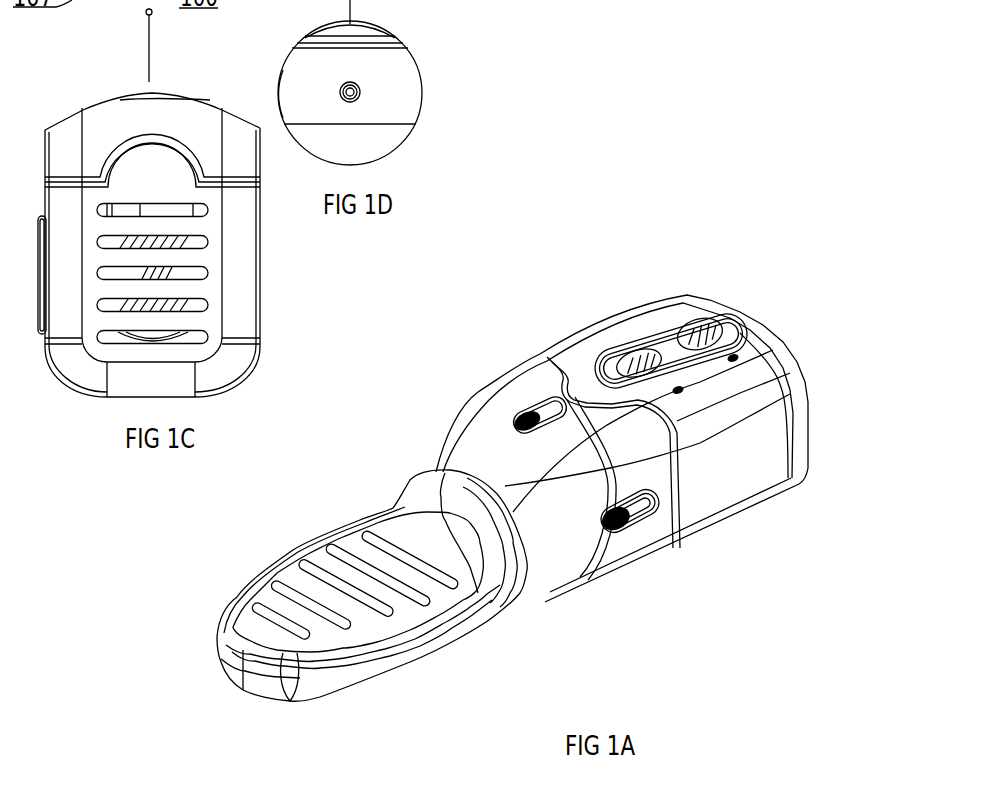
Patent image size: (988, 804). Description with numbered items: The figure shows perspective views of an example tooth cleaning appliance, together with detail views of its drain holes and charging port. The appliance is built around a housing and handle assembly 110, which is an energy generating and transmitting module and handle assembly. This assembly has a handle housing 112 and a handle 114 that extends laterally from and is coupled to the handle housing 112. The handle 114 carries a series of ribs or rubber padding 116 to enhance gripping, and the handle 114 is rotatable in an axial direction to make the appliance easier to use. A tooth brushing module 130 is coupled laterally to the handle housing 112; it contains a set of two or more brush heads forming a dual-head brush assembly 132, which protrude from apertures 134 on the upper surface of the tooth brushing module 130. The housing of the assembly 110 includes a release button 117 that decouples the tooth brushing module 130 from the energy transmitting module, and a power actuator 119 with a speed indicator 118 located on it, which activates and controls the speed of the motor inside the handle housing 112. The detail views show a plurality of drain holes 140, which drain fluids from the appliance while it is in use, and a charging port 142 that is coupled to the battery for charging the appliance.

In FIG. 1A, the housing and handle assembly 110 is at (477, 483).
In FIG. 1A, the handle housing 112 is at (582, 578).
In FIG. 1A, the handle 114 is at (403, 667).
In FIG. 1A, the ribs or rubber padding 116 is at (257, 627).
In FIG. 1A, the release button 117 is at (520, 412).
In FIG. 1A, the speed indicator 118 is at (634, 531).
In FIG. 1A, the power actuator 119 is at (688, 542).
In FIG. 1C, the tooth brushing module 130 is at (262, 318).
In FIG. 1A, the tooth brushing module 130 is at (763, 470).
In FIG. 1A, the dual-head brush assembly 132 is at (633, 353).
In FIG. 1A, the apertures 134 is at (678, 390).
In FIG. 1C, the drain holes 140 is at (215, 340).
In FIG. 1D, the charging port 142 is at (421, 116).